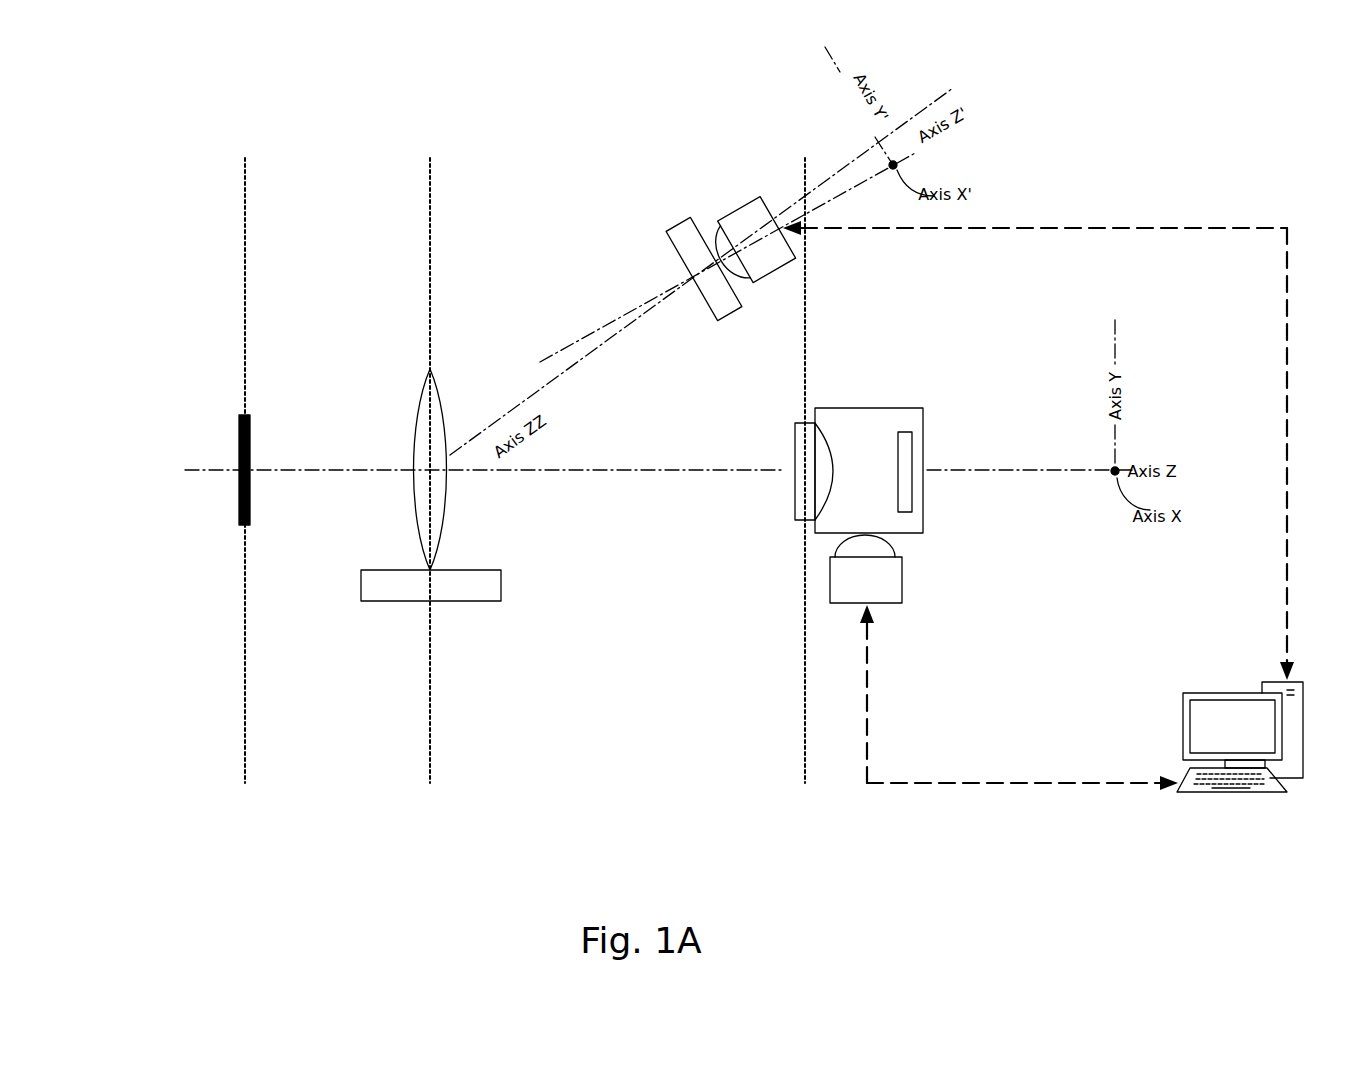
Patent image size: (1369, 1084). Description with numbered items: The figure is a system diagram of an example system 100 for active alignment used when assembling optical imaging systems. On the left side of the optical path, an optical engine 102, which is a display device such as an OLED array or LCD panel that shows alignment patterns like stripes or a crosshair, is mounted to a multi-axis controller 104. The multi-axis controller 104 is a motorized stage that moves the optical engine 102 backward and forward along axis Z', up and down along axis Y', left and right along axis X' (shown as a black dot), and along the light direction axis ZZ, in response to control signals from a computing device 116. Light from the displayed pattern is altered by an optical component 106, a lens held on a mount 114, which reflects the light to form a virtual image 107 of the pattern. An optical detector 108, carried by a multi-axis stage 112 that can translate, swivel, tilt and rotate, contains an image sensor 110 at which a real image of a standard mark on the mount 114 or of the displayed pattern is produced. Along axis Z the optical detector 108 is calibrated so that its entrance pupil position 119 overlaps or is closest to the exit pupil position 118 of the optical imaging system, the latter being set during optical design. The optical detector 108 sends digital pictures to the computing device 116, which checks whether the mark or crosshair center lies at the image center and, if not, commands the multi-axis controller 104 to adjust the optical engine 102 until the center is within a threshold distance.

The system 100 is at (213, 57).
The optical engine 102 is at (667, 232).
The multi-axis controller 104 is at (737, 222).
The optical component 106 is at (414, 406).
The virtual image 107 is at (239, 499).
The optical detector 108 is at (888, 408).
The image sensor 110 is at (912, 455).
The multi-axis stage 112 is at (888, 603).
The mount 114 is at (455, 601).
The computing device 116 is at (1273, 792).
The exit pupil position 118 is at (431, 511).
The entrance pupil position 119 is at (805, 517).